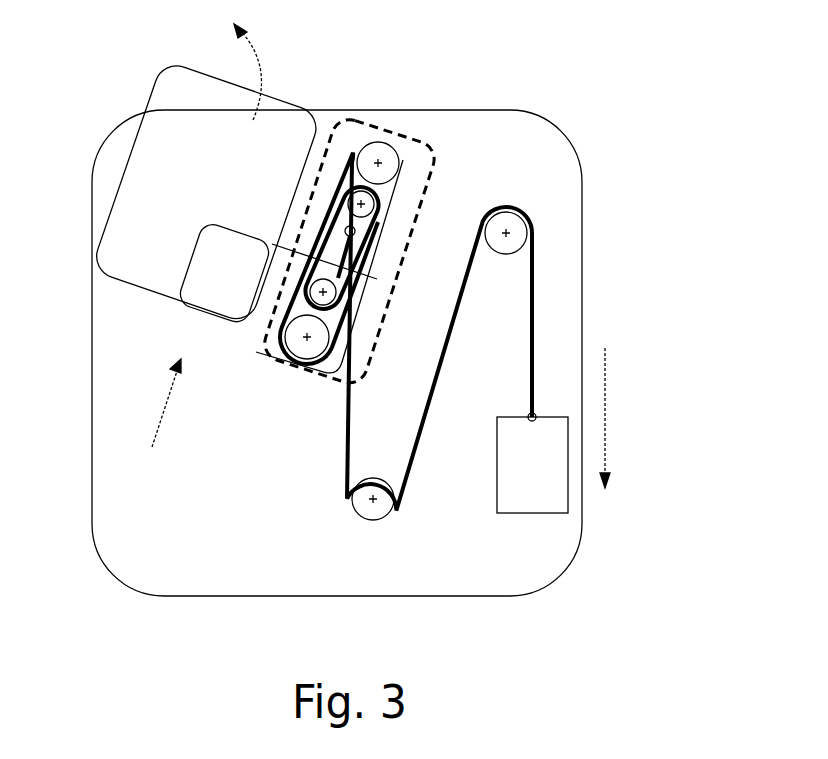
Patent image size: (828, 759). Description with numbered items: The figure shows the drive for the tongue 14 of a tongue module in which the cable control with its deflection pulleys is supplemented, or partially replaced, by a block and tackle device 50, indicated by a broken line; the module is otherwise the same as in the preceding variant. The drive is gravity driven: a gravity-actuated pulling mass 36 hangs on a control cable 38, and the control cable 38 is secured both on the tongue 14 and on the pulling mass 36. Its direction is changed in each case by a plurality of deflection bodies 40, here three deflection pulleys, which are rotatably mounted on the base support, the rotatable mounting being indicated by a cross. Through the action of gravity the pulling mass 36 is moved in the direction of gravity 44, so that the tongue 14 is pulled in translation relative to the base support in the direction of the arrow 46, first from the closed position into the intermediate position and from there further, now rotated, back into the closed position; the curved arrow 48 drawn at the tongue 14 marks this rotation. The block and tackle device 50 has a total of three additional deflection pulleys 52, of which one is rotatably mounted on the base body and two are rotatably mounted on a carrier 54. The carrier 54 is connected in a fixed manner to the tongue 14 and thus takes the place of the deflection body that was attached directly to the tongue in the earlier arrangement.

The tongue 14 is at (135, 141).
The pulling mass 36 is at (568, 497).
The control cable 38 is at (533, 318).
The deflection bodies 40 is at (400, 170).
The direction of gravity 44 is at (606, 418).
The arrow 46 is at (166, 415).
The direction of panel rotation 48 is at (259, 60).
The block and tackle device 50 is at (430, 145).
The additional deflection pulleys 52 is at (330, 325).
The carrier 54 is at (178, 325).